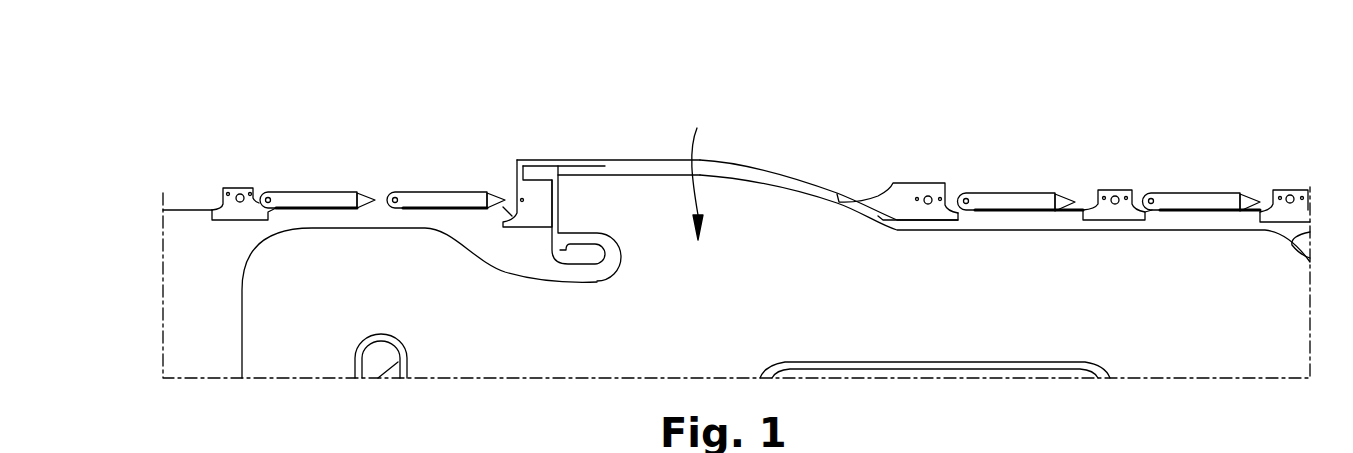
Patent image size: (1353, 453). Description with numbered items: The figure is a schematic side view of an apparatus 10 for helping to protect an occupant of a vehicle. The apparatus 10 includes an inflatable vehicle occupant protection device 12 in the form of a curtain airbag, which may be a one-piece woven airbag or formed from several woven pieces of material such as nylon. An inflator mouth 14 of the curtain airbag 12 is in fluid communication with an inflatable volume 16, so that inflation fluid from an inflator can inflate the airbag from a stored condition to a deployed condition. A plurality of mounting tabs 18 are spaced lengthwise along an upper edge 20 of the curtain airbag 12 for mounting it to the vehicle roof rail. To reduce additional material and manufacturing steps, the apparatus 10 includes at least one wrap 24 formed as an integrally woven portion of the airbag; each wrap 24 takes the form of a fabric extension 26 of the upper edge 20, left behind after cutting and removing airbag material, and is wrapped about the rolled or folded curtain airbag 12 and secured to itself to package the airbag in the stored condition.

The apparatus 10 is at (170, 106).
The inflatable vehicle occupant protection device 12 is at (792, 205).
The inflator mouth 14 is at (578, 195).
The inflatable volume 16 is at (709, 169).
The mounting tabs 18 is at (250, 188).
The upper edge 20 is at (380, 195).
The wrap 24 is at (310, 200).
The fabric extension 26 is at (344, 200).